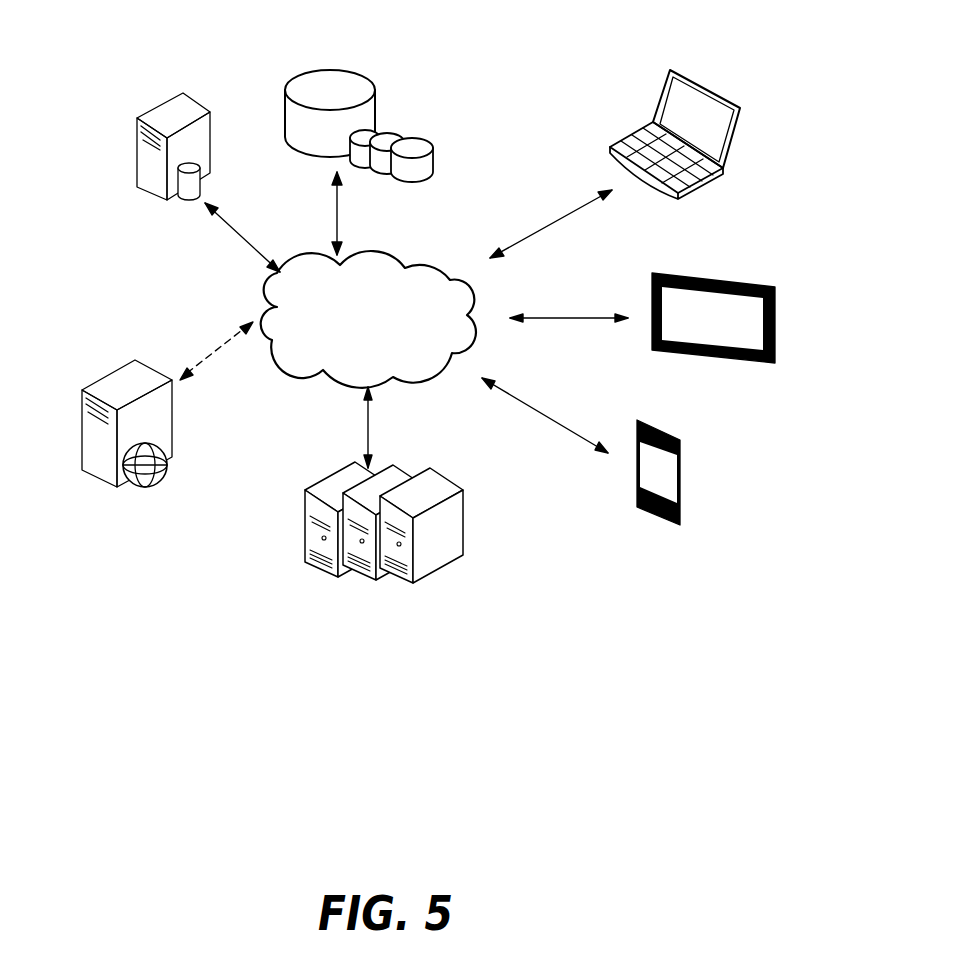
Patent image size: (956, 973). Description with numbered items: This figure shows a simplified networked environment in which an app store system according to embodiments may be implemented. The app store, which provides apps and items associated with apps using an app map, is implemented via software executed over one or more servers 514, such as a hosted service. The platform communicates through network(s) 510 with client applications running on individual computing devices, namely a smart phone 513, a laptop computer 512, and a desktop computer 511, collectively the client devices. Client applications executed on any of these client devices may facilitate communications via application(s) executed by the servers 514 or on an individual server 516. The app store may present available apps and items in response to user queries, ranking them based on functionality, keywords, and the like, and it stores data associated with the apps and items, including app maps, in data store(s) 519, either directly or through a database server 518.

The network(s) 510 is at (373, 240).
The desktop computer 511 is at (712, 72).
The laptop computer 512 is at (747, 255).
The smart phone 513 is at (687, 438).
The servers 514 is at (333, 470).
The individual server 516 is at (105, 373).
The database server 518 is at (175, 212).
The data store(s) 519 is at (345, 47).